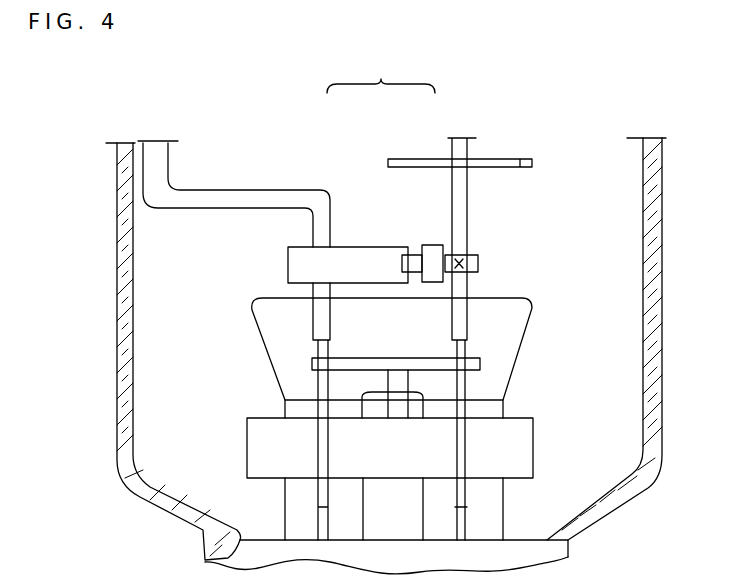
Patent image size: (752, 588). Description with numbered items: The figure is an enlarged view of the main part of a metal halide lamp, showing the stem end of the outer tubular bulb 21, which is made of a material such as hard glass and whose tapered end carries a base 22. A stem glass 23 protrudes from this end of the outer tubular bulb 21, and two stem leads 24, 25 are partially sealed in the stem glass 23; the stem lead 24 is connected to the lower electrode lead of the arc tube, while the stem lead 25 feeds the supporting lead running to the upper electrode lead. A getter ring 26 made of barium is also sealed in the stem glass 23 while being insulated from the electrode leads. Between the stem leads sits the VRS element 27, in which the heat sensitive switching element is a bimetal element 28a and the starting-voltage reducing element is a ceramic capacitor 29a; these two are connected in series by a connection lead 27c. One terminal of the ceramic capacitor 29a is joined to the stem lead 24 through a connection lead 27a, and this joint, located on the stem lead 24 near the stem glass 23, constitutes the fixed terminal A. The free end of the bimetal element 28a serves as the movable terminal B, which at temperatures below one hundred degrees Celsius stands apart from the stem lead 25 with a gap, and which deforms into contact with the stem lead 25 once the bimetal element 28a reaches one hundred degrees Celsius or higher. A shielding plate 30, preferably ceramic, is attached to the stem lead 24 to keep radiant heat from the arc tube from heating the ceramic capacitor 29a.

The outer tubular bulb 21 is at (655, 240).
The base 22 is at (568, 552).
The stem glass 23 is at (505, 338).
The stem lead 24 is at (469, 195).
The stem lead 25 is at (219, 208).
The getter ring 26 is at (312, 363).
The VRS element 27 is at (381, 72).
The connection lead 27a is at (480, 268).
The connection lead 27c is at (410, 255).
The bimetal element 28a is at (350, 258).
The ceramic capacitor 29a is at (432, 255).
The shielding plate 30 is at (523, 159).
The fixed terminal A is at (470, 252).
The movable terminal B is at (300, 258).